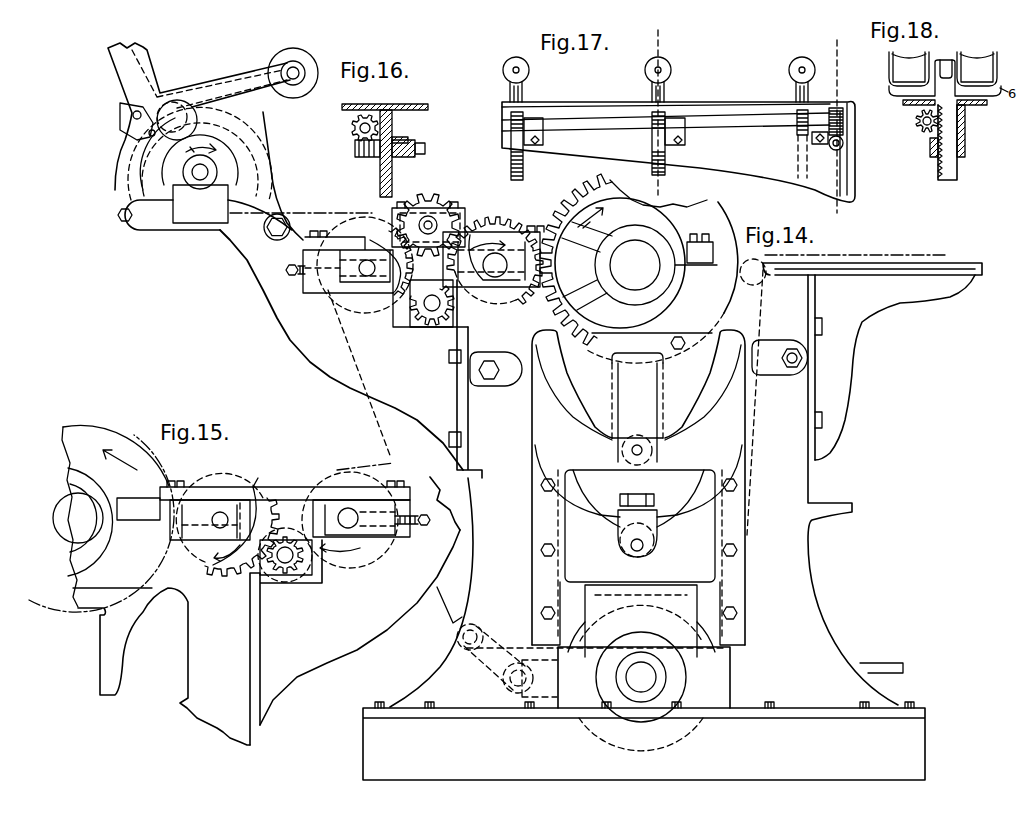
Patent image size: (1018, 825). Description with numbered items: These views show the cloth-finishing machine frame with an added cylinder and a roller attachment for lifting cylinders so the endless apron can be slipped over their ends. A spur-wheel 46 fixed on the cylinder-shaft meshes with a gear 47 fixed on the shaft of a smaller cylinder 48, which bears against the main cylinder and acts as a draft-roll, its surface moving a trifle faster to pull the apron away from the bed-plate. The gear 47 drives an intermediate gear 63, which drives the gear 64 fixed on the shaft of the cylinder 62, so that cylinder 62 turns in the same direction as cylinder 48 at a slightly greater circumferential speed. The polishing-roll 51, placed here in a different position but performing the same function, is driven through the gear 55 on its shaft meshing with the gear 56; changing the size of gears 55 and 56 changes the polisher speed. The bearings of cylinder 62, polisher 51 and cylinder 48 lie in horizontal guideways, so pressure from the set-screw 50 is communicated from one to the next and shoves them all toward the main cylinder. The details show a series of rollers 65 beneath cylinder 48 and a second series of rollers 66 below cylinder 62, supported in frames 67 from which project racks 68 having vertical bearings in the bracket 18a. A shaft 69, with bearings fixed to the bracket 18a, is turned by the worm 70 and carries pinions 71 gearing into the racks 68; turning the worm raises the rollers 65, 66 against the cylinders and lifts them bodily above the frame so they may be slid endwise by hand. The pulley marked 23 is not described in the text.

In FIG. 17, the bracket 18a is at (843, 177).
In FIG. 18, the bracket 18a is at (957, 143).
In FIG. 14, the drive shaft pulley 23 is at (641, 677).
In FIG. 14, the spur-wheel 46 is at (653, 351).
In FIG. 14, the gear 47 is at (528, 230).
In FIG. 14, the smaller cylinder 48 is at (512, 284).
In FIG. 15, the smaller cylinder 48 is at (224, 524).
In FIG. 14, the set-screw 50 is at (295, 279).
In FIG. 15, the set-screw 50 is at (425, 527).
In FIG. 14, the polishing-roll 51 is at (430, 327).
In FIG. 15, the polishing-roll 51 is at (302, 565).
In FIG. 15, the gear 55 is at (281, 578).
In FIG. 15, the gear 56 is at (258, 486).
In FIG. 14, the cylinder 62 is at (371, 316).
In FIG. 15, the cylinder 62 is at (356, 520).
In FIG. 14, the intermediate gear 63 is at (437, 200).
In FIG. 16, the gear 64 is at (381, 190).
In FIG. 17, the rollers 65 is at (529, 70).
In FIG. 18, the rollers 65 is at (977, 54).
In FIG. 18, the rollers 66 is at (912, 54).
In FIG. 17, the frames 67 is at (523, 92).
In FIG. 17, the racks 68 is at (524, 172).
In FIG. 16, the shaft 69 is at (350, 127).
In FIG. 17, the shaft 69 is at (750, 127).
In FIG. 18, the shaft 69 is at (915, 118).
In FIG. 16, the worm 70 is at (363, 150).
In FIG. 17, the worm 70 is at (845, 143).
In FIG. 17, the pinions 71 is at (512, 132).
In FIG. 18, the pinions 71 is at (920, 130).